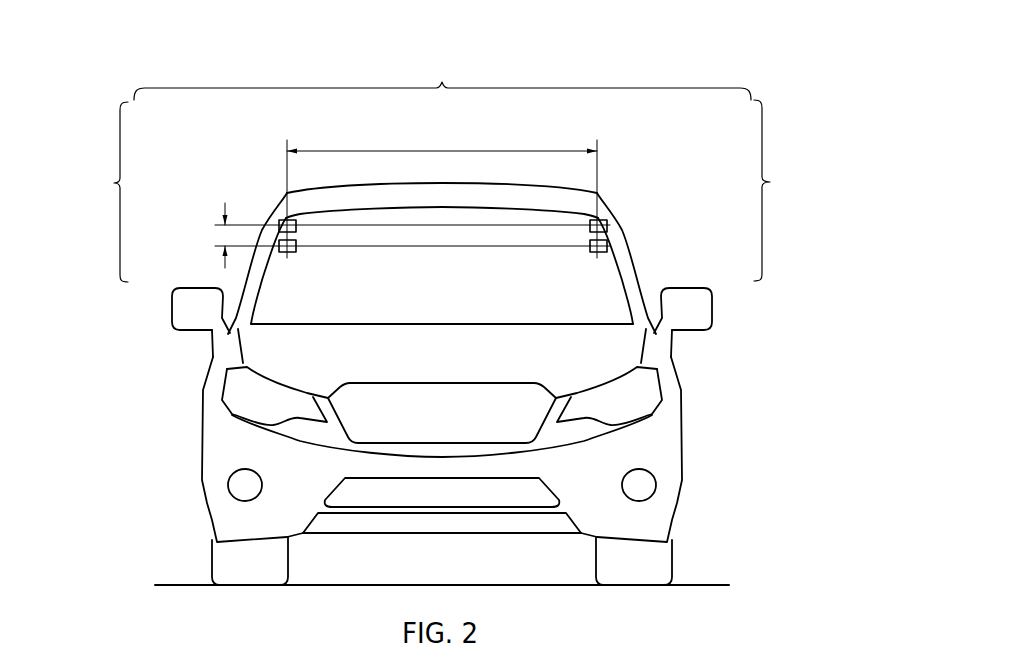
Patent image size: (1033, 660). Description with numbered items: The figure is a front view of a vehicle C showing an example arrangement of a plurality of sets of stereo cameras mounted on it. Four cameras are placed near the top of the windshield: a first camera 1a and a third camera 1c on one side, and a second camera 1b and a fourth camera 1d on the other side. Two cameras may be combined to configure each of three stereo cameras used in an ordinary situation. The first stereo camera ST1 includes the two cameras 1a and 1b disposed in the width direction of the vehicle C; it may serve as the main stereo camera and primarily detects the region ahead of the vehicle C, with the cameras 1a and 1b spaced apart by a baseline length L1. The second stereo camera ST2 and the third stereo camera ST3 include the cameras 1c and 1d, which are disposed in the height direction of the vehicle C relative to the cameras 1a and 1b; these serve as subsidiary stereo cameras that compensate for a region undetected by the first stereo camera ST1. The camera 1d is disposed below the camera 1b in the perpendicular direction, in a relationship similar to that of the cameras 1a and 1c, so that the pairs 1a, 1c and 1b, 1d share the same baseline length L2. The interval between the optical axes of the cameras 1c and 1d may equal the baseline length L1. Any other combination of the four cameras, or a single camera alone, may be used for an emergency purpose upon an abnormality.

The vehicle C is at (684, 48).
The first camera 1a is at (604, 219).
The second camera 1b is at (283, 219).
The third camera 1c is at (601, 253).
The fourth camera 1d is at (283, 253).
The first stereo camera ST1 is at (442, 75).
The second stereo camera ST2 is at (790, 190).
The third stereo camera ST3 is at (94, 192).
The baseline length L1 is at (442, 191).
The baseline length L2 is at (397, 235).